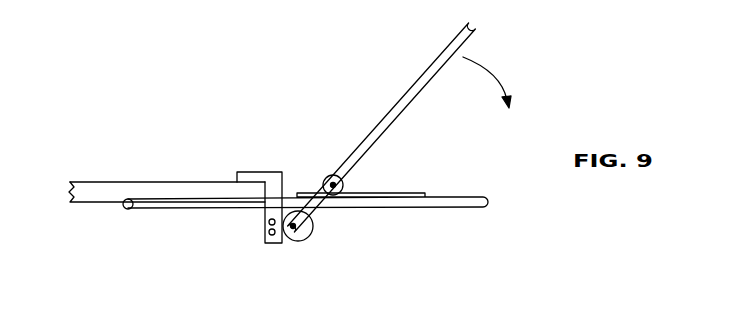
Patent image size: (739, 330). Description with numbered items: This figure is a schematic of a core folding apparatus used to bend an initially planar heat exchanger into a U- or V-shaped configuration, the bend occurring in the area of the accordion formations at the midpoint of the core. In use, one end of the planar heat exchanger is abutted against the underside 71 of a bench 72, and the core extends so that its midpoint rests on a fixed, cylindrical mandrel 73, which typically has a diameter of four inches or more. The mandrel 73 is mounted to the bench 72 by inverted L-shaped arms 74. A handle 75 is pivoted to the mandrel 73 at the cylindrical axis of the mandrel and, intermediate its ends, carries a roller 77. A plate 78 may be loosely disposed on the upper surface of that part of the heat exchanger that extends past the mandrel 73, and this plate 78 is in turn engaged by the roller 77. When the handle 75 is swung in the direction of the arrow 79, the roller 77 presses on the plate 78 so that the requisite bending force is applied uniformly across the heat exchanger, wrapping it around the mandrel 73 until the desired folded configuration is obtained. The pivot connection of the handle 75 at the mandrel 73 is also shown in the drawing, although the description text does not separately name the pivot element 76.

The underside 71 is at (100, 203).
The bench 72 is at (173, 181).
The cylindrical mandrel 73 is at (312, 233).
The inverted L-shaped arms 74 is at (273, 171).
The handle 75 is at (428, 75).
The pivot pin 76 is at (293, 236).
The roller 77 is at (343, 188).
The plate 78 is at (417, 195).
The arrow 79 is at (498, 78).